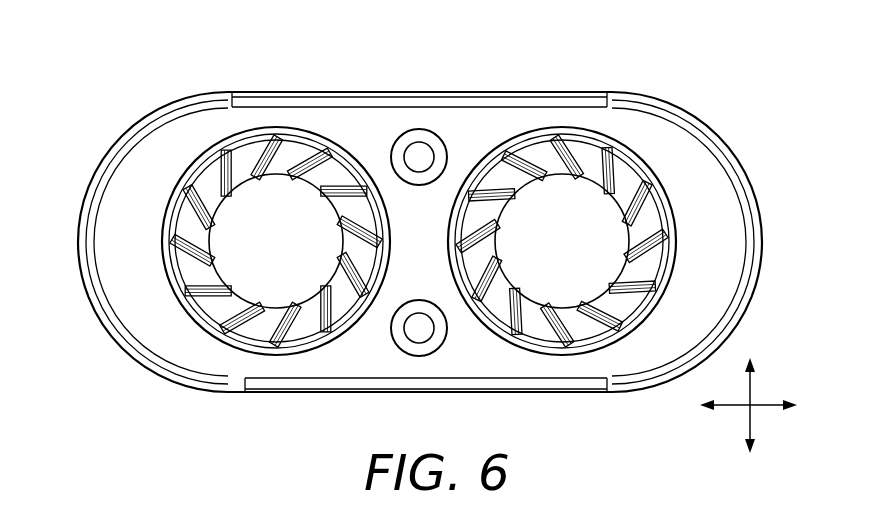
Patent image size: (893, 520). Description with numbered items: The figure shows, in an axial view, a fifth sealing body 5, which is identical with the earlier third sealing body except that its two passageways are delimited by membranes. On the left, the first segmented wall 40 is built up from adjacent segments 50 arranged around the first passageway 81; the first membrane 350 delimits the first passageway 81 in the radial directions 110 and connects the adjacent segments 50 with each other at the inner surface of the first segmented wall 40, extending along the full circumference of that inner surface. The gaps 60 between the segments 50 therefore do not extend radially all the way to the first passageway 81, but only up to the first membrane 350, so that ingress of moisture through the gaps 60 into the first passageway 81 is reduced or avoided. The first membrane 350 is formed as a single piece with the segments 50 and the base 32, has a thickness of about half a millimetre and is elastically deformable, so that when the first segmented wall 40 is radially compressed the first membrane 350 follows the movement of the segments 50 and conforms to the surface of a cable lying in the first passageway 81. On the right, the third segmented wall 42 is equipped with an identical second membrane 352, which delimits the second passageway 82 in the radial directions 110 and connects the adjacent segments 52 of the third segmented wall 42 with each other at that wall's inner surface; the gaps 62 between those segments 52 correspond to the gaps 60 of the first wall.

The fifth sealing body 5 is at (116, 40).
The base 32 is at (157, 145).
The first segmented wall 40 is at (130, 203).
The third segmented wall 42 is at (668, 215).
The segments 50 is at (217, 307).
The segments 52 is at (548, 335).
The gaps 60 is at (266, 140).
The second fan blades 62 is at (603, 142).
The first passageway 81 is at (262, 218).
The second passageway 82 is at (549, 218).
The first membrane 350 is at (336, 277).
The second membrane 352 is at (622, 277).
The radial directions 110 is at (752, 386).